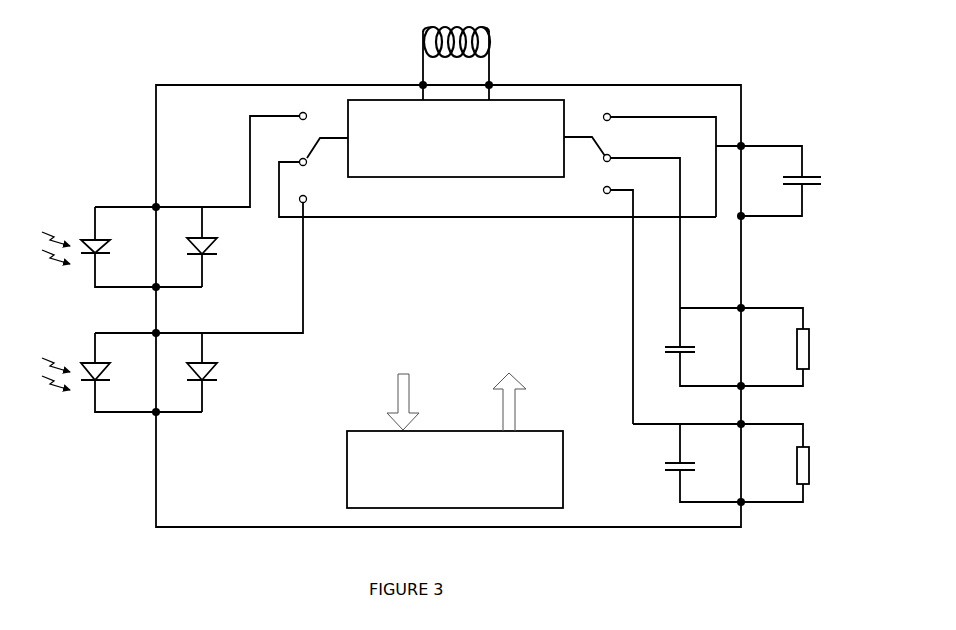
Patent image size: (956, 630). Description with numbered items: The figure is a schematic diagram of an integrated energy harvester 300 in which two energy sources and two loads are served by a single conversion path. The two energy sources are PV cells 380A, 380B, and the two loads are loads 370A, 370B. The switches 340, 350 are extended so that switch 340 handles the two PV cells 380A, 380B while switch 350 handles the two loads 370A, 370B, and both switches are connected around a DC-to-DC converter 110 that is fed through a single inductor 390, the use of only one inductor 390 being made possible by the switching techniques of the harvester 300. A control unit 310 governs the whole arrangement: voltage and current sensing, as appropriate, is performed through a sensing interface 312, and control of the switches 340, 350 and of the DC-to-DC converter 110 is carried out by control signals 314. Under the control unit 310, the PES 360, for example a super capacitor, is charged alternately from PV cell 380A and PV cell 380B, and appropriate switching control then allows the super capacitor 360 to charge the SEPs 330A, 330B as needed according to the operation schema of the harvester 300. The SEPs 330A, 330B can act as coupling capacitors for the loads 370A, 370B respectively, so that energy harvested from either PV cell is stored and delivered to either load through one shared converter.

The integrated energy harvester 300 is at (208, 85).
The DC-to-DC converter 110 is at (400, 178).
The inductor 390 is at (422, 37).
The switch 340 is at (312, 150).
The switch 350 is at (580, 130).
The PES (super capacitor) 360 is at (826, 182).
The SEP 330A is at (718, 335).
The SEP 330B is at (718, 450).
The load 370A is at (812, 343).
The load 370B is at (812, 458).
The PV cell 380A is at (112, 248).
The PV cell 380B is at (112, 375).
The control unit 310 is at (347, 474).
The sensing interface 312 is at (398, 398).
The control signals 314 is at (503, 407).